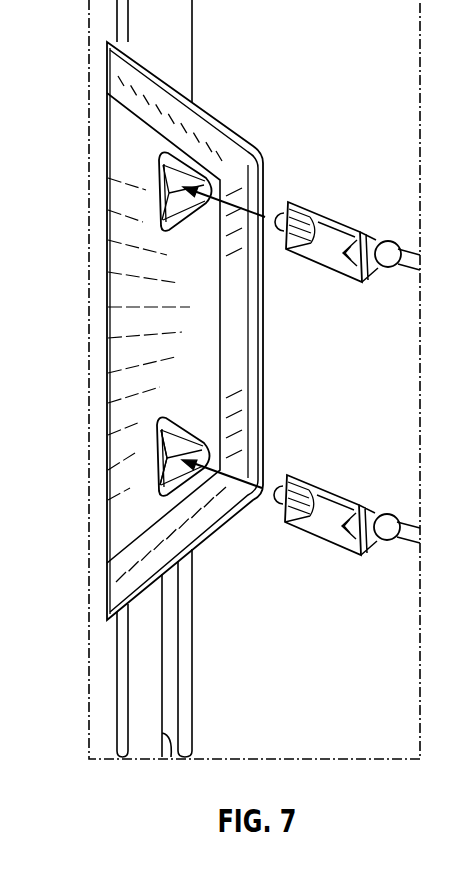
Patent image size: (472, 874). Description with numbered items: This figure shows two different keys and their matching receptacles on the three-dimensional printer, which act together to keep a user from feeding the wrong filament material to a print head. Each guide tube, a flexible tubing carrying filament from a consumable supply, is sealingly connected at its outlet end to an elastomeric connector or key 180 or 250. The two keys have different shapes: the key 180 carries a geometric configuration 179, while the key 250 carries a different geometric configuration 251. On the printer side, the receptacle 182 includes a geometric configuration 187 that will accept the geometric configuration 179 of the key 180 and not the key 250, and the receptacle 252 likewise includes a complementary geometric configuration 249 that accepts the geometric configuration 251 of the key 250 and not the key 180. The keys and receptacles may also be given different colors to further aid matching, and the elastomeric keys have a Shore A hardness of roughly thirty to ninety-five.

The receptacle 182 is at (260, 158).
The geometric configuration 187 is at (150, 178).
The second connector port 249 is at (150, 443).
The receptacle 252 is at (168, 476).
The elastomeric connector or key 180 is at (333, 220).
The geometric configuration 179 is at (307, 263).
The elastomeric connector or key 250 is at (332, 494).
The geometric configuration 251 is at (310, 535).